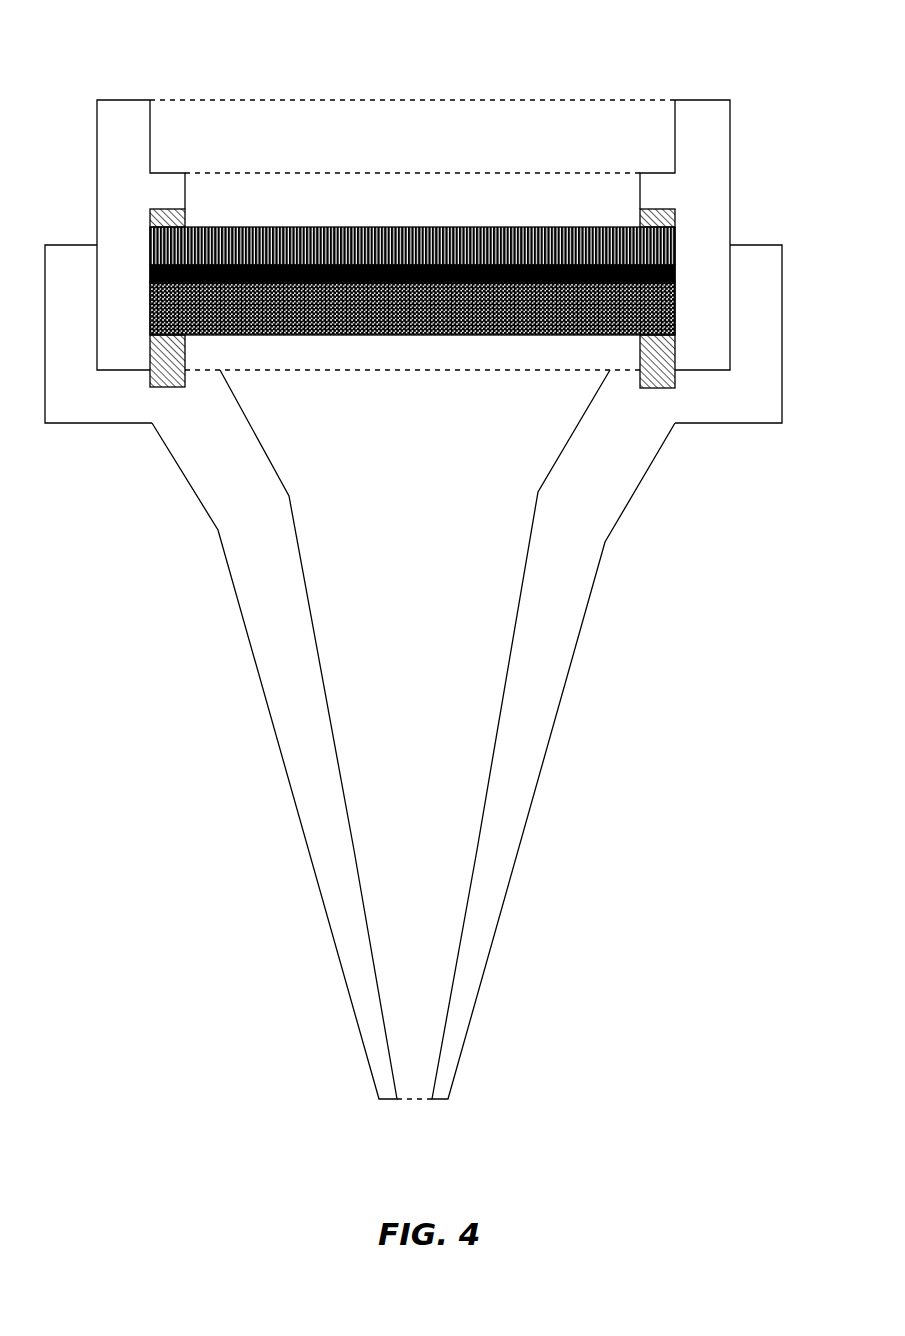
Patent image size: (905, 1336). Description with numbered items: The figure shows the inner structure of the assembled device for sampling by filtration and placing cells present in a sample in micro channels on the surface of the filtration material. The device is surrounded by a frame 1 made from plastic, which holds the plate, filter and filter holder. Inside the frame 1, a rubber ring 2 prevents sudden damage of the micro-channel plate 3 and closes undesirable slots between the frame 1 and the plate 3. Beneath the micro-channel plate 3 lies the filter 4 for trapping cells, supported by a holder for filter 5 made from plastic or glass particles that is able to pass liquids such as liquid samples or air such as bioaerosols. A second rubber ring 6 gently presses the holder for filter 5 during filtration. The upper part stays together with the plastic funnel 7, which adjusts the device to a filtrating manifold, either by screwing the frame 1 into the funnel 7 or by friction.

The frame 1 is at (133, 137).
The rubber ring 2 is at (172, 209).
The micro-channel plate 3 is at (668, 242).
The filter 4 is at (628, 285).
The holder for filter 5 is at (626, 320).
The rubber ring 6 is at (172, 372).
The plastic funnel 7 is at (327, 796).